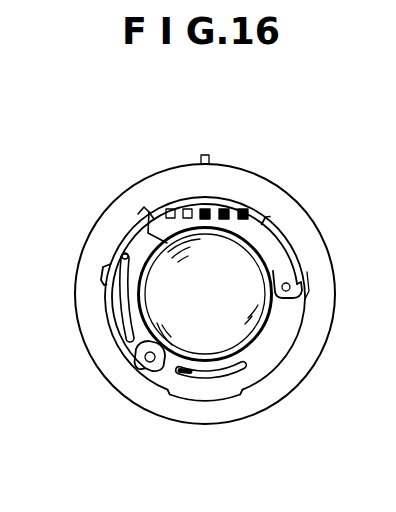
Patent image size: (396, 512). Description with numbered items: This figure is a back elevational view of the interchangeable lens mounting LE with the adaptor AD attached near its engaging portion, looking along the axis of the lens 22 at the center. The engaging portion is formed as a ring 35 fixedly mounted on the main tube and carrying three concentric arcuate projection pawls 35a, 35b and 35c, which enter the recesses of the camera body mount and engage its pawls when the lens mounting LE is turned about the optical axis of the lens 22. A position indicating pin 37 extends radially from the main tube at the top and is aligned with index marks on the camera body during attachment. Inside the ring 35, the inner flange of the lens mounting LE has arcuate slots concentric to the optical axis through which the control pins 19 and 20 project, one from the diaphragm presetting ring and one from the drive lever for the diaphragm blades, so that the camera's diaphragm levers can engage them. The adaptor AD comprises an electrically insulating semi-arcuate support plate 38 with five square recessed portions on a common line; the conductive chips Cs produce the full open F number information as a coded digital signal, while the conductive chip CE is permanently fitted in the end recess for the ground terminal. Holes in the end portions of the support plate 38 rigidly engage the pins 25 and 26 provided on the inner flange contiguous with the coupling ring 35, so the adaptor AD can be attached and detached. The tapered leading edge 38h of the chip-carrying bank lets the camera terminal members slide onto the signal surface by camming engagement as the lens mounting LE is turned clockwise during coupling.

The ring 35 is at (312, 333).
The arcuate projection pawl 35a is at (109, 262).
The arcuate projection pawl 35b is at (283, 229).
The arcuate projection pawl 35c is at (227, 396).
The position indicating pin 37 is at (207, 155).
The support plate 38 is at (283, 264).
The leading edge (tapered portion) 38h is at (271, 233).
The pin 26 is at (291, 289).
The pin 25 is at (148, 362).
The control pin 19 is at (124, 259).
The control pin 20 is at (183, 375).
The lens (optical system) 22 is at (254, 345).
The conductive chip Cs is at (225, 208).
The conductive chip (ground) CE is at (254, 208).
The lens mounting LE is at (131, 179).
The adaptor AD is at (146, 225).